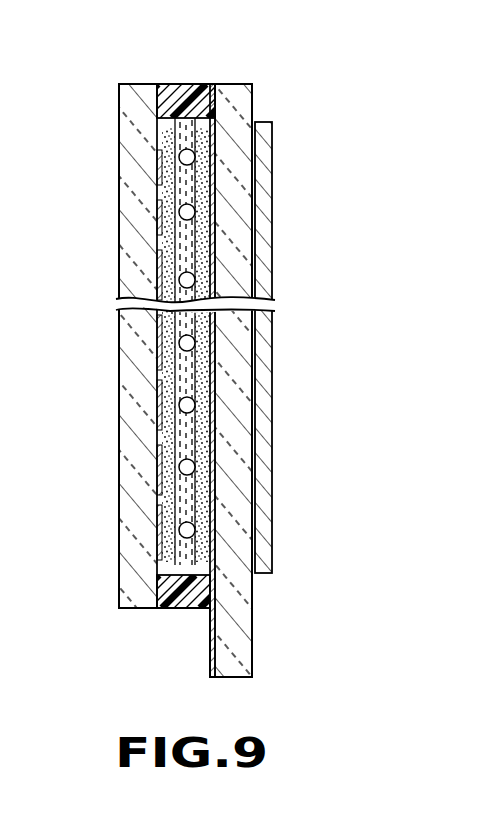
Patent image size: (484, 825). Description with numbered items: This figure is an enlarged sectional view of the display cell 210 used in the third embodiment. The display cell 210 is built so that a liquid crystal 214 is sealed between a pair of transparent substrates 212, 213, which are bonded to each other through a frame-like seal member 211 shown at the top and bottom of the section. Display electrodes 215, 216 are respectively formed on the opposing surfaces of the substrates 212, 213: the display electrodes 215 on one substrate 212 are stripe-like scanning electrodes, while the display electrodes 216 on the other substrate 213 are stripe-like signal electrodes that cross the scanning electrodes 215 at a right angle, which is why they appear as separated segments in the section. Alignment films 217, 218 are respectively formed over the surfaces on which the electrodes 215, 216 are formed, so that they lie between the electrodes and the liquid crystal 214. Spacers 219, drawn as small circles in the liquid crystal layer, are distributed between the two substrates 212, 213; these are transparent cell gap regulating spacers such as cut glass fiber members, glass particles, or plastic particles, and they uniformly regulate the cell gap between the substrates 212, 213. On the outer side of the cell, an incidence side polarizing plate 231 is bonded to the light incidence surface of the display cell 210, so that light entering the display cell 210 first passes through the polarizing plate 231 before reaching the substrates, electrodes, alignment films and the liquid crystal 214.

The display cell 210 is at (110, 575).
The seal member 211 is at (185, 90).
The transparent substrate 212 is at (243, 105).
The transparent substrate 213 is at (127, 110).
The liquid crystal 214 is at (190, 245).
The display electrodes 215 is at (217, 193).
The display electrodes 216 is at (160, 213).
The alignment film 217 is at (203, 365).
The alignment film 218 is at (160, 411).
The spacers 219 is at (178, 280).
The incidence side polarizing plate 231 is at (272, 522).